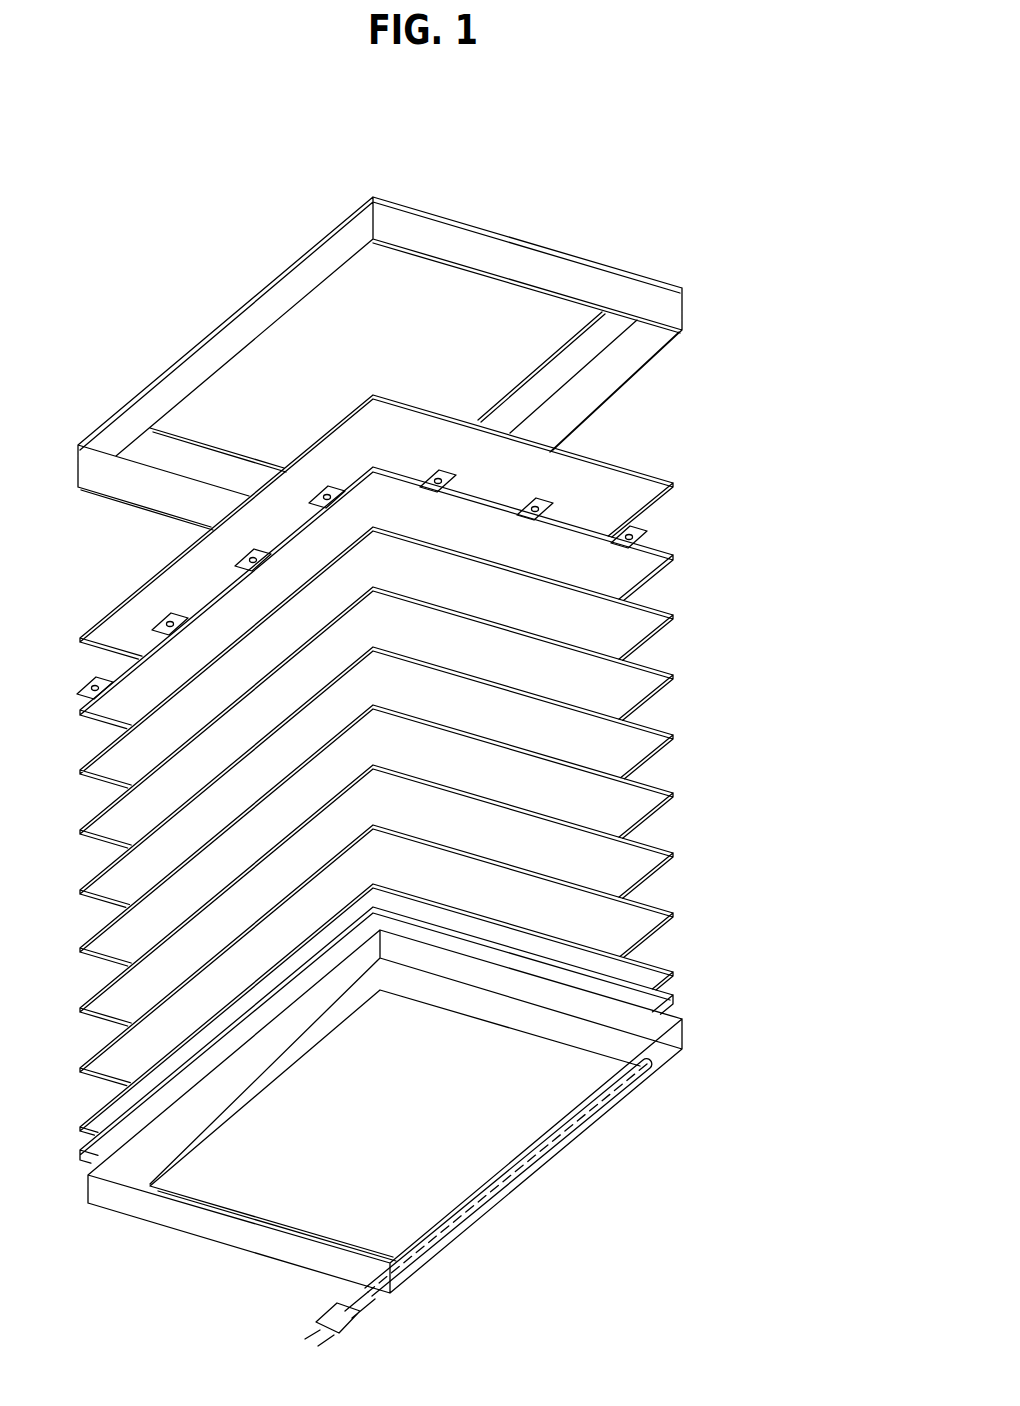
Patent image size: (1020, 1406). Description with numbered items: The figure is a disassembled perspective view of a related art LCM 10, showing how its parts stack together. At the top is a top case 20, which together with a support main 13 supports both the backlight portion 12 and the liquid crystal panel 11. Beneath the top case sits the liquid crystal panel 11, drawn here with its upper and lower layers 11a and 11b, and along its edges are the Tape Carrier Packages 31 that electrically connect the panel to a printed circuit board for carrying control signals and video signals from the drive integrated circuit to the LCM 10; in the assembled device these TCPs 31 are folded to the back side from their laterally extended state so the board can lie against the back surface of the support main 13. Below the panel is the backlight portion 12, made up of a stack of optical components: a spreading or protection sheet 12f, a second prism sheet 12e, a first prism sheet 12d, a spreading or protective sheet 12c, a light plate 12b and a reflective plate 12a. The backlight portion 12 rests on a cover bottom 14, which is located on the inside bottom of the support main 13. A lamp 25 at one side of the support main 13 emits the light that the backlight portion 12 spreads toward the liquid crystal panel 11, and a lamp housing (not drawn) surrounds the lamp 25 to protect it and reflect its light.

The LCM 10 is at (612, 172).
The top case 20 is at (683, 316).
The liquid crystal panel 11 is at (666, 552).
The upper polarizing plate 11a is at (652, 480).
The lower polarizing plate 11b is at (666, 612).
The Tape Carrier Package 31 is at (641, 529).
The backlight portion 12 is at (454, 861).
The reflective plate 12a is at (415, 1009).
The light plate 12b is at (666, 910).
The spreading or protective sheet 12c is at (666, 850).
The first prism sheet 12d is at (666, 790).
The second prism sheet 12e is at (666, 732).
The spreading or protection sheet 12f is at (666, 672).
The cover bottom 14 is at (663, 1000).
The support main 13 is at (678, 1030).
The lamp 25 is at (622, 1102).